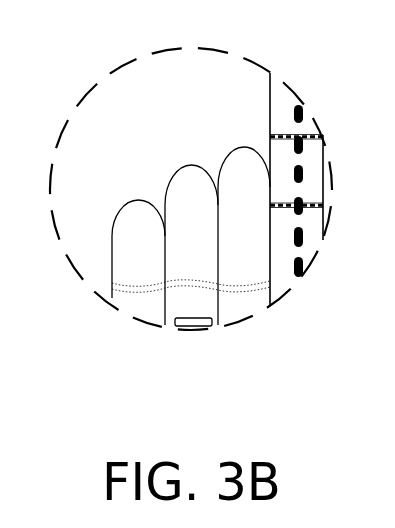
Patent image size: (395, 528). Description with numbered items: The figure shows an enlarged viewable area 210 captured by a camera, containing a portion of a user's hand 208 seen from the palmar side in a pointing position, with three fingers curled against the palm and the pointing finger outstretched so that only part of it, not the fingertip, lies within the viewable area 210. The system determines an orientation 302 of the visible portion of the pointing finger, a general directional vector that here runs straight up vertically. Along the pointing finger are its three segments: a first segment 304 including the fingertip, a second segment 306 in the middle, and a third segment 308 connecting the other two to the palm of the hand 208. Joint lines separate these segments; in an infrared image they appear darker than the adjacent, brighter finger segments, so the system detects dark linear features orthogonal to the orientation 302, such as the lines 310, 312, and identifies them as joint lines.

The viewable area 210 is at (130, 61).
The hand 208 is at (112, 268).
The orientation 302 is at (305, 173).
The first segment 304 is at (283, 96).
The second segment 306 is at (281, 155).
The third segment 308 is at (283, 280).
The joint line 310 is at (318, 134).
The joint line 312 is at (305, 207).